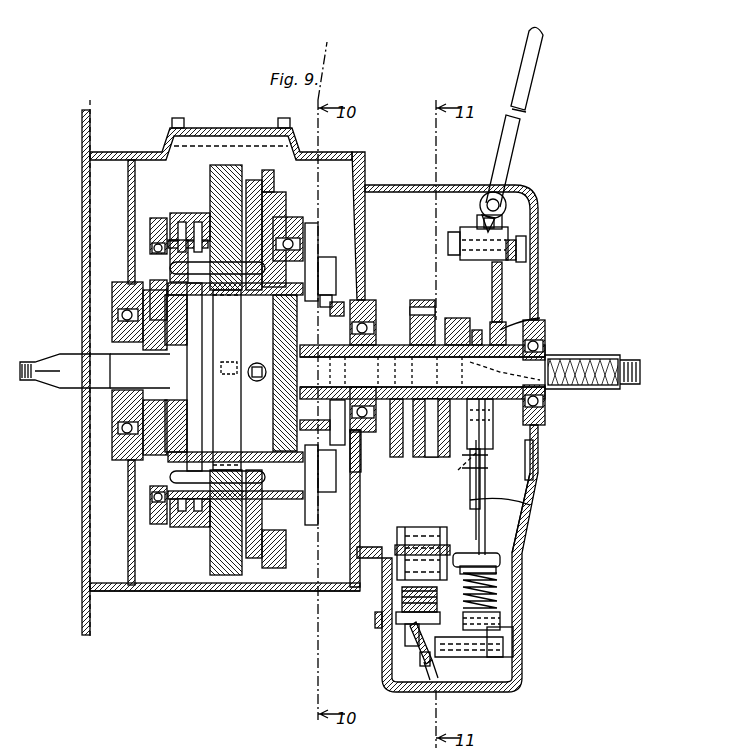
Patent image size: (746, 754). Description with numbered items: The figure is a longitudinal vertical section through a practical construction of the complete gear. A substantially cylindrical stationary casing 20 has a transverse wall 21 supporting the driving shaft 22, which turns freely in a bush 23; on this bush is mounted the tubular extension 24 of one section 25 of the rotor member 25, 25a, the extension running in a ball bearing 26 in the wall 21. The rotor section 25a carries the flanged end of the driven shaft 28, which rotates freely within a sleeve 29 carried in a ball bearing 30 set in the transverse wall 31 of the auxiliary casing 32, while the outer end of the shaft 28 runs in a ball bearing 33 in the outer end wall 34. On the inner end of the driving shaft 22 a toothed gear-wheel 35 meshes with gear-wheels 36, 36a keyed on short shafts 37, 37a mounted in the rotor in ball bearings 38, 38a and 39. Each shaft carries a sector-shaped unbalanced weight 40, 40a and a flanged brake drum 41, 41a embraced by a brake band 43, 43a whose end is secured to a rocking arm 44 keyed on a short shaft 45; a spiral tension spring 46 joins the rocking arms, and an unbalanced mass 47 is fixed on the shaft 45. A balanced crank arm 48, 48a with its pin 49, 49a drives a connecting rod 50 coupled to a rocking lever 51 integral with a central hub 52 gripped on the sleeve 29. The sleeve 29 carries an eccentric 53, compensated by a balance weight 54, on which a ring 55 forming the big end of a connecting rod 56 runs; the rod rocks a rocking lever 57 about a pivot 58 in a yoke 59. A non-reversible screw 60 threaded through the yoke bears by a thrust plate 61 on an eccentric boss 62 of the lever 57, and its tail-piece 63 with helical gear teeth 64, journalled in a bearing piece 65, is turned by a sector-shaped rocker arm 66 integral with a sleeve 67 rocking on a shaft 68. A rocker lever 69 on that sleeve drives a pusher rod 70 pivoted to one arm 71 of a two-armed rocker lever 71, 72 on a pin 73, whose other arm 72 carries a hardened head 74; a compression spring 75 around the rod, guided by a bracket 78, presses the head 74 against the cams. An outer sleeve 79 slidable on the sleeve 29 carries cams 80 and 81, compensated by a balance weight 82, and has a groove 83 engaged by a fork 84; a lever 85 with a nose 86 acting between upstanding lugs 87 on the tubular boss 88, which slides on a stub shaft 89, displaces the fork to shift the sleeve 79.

The stationary casing 20 is at (172, 592).
The transverse wall 21 is at (130, 562).
The driving shaft 22 is at (68, 378).
The bush 23 is at (110, 392).
The tubular extension 24 is at (112, 330).
The rotor member section 25 is at (150, 505).
The rotor member section 25a is at (325, 432).
The ball bearing 26 is at (122, 313).
The driven shaft 28 is at (576, 356).
The sleeve 29 is at (368, 432).
The ball bearing 30 is at (378, 311).
The transverse wall 31 is at (362, 230).
The auxiliary casing 32 is at (390, 185).
The ball bearing 33 is at (545, 340).
The outer end wall 34 is at (540, 293).
The toothed gear-wheel 35 is at (190, 412).
The gear-wheel 36 is at (186, 213).
The gear-wheel 36a is at (175, 530).
The short shaft 37 is at (168, 268).
The short shaft 37a is at (172, 468).
The ball bearing 38 is at (152, 246).
The ball bearing 38a is at (152, 497).
The ball bearing 39 is at (290, 217).
The unbalanced weight 40 is at (220, 165).
The unbalanced weight 40a is at (224, 575).
The flanged brake drum 41 is at (270, 192).
The flanged brake drum 41a is at (268, 560).
The brake band 43 is at (255, 180).
The brake band 43a is at (258, 558).
The rocking arm 44 is at (251, 378).
The short shaft 45 is at (238, 360).
The spiral tension spring 46 is at (205, 326).
The unbalanced mass 47 is at (358, 468).
The balanced crank arm 48 is at (315, 232).
The balanced crank arm 48a is at (310, 525).
The pin 49 is at (337, 270).
The pin 49a is at (330, 492).
The connecting rod 50 is at (333, 298).
The rocking lever 51 is at (345, 305).
The central hub 52 is at (336, 422).
The eccentric 53 is at (453, 318).
The balance weight 54 is at (397, 457).
The ring 55 is at (418, 300).
The connecting rod 56 is at (478, 510).
The rocking lever 57 is at (402, 548).
The pivot 58 is at (402, 590).
The yoke 59 is at (500, 556).
The non-reversible screw 60 is at (378, 626).
The thrust plate 61 is at (396, 618).
The eccentric boss 62 is at (522, 532).
The tail-piece 63 is at (428, 682).
The helical gear teeth 64 is at (420, 650).
The bearing piece 65 is at (424, 666).
The sector-shaped rocker arm 66 is at (410, 640).
The sleeve 67 is at (465, 660).
The shaft 68 is at (500, 660).
The rocker lever 69 is at (500, 620).
The pusher rod 70 is at (530, 505).
The arm of two-armed rocker lever 71 is at (533, 485).
The arm of two-armed rocker lever 72 is at (480, 426).
The pin 73 is at (460, 474).
The hardened head 74 is at (540, 382).
The compression spring 75 is at (498, 590).
The bracket 78 is at (496, 570).
The outer sleeve 79 is at (450, 410).
The cam 80 is at (476, 330).
The cam 81 is at (492, 322).
The balance weight 82 is at (420, 527).
The groove 83 is at (538, 318).
The fork 84 is at (502, 276).
The lever 85 is at (520, 130).
The nose 86 is at (500, 214).
The upstanding lugs 87 is at (482, 222).
The tubular boss 88 is at (462, 230).
The stub shaft 89 is at (526, 246).